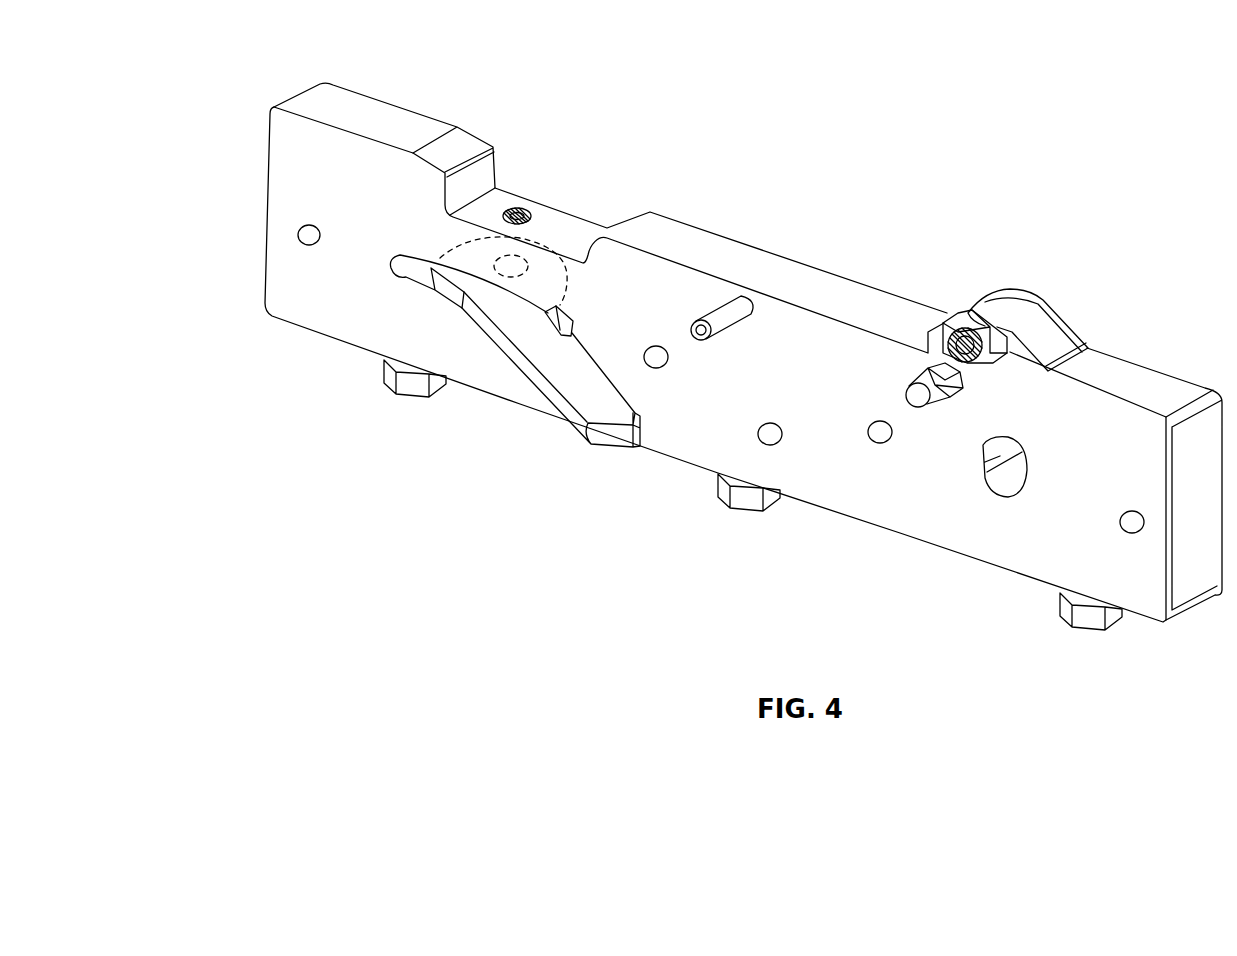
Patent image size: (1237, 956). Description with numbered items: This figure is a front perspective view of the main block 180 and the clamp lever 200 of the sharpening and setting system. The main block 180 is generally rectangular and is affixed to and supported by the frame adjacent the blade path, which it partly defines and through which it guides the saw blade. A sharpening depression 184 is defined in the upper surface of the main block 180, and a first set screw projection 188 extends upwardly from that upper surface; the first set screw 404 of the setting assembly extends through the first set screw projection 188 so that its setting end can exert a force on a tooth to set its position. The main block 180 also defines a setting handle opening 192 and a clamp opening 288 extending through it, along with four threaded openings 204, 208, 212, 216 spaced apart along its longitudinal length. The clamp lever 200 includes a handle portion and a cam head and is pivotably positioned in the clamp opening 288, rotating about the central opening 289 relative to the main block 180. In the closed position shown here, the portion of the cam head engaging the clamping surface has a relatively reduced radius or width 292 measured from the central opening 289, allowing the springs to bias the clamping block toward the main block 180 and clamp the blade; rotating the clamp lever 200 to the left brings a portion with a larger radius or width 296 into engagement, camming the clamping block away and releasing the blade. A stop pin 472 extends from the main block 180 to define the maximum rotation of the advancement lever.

The main block 180 is at (836, 108).
The sharpening depression 184 is at (567, 166).
The first set screw projection 188 is at (1053, 332).
The setting handle opening 192 is at (992, 482).
The clamp lever 200 is at (575, 377).
The threaded opening 204 is at (298, 233).
The threaded opening 208 is at (654, 364).
The threaded opening 212 is at (876, 441).
The threaded opening 216 is at (1126, 532).
The clamp opening 288 is at (412, 272).
The central opening 289 is at (530, 250).
The reduced radius or width 292 is at (527, 256).
The larger radius or width 296 is at (488, 248).
The first set screw 404 is at (947, 322).
The stop pin 472 is at (726, 306).